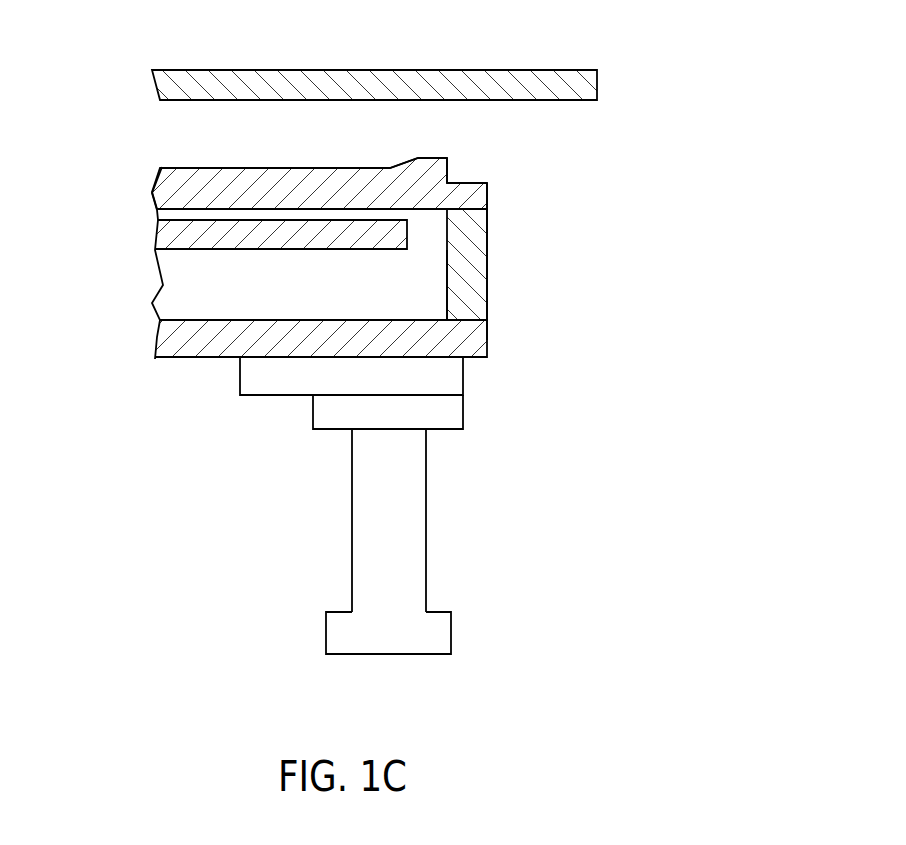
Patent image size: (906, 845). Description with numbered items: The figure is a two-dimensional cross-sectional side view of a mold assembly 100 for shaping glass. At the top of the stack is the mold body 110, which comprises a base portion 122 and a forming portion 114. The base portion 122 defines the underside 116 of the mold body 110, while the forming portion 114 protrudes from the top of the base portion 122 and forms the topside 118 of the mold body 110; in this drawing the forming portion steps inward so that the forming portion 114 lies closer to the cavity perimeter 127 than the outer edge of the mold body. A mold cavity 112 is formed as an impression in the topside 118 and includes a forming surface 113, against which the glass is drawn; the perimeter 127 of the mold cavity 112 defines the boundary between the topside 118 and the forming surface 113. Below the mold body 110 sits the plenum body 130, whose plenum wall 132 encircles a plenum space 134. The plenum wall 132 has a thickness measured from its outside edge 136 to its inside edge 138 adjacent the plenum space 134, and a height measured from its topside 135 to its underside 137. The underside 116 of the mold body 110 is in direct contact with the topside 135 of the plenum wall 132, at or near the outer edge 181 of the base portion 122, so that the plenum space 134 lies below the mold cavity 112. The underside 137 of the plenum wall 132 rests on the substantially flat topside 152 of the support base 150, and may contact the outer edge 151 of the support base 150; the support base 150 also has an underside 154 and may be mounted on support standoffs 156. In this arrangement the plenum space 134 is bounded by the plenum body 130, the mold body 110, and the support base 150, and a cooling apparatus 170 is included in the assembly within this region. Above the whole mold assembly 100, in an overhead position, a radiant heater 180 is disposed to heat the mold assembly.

The mold assembly 100 is at (647, 148).
The mold body 110 is at (152, 193).
The mold cavity 112 is at (248, 167).
The forming surface 113 is at (200, 167).
The forming portion 114 is at (447, 158).
The underside 116 is at (428, 210).
The topside 118 is at (435, 158).
The base portion 122 is at (468, 183).
The perimeter 127 is at (414, 160).
The plenum body 130 is at (487, 262).
The plenum wall 132 is at (487, 235).
The plenum space 134 is at (239, 294).
The topside 135 is at (472, 200).
The outside edge 136 is at (487, 298).
The underside 137 is at (462, 322).
The inside edge 138 is at (446, 307).
The support base 150 is at (487, 338).
The outer edge 151 is at (487, 325).
The topside 152 is at (178, 319).
The underside 154 is at (180, 360).
The support standoffs 156 is at (426, 517).
The cooling apparatus 170 is at (293, 249).
The heater 180 is at (481, 70).
The outer edge 181 is at (487, 187).